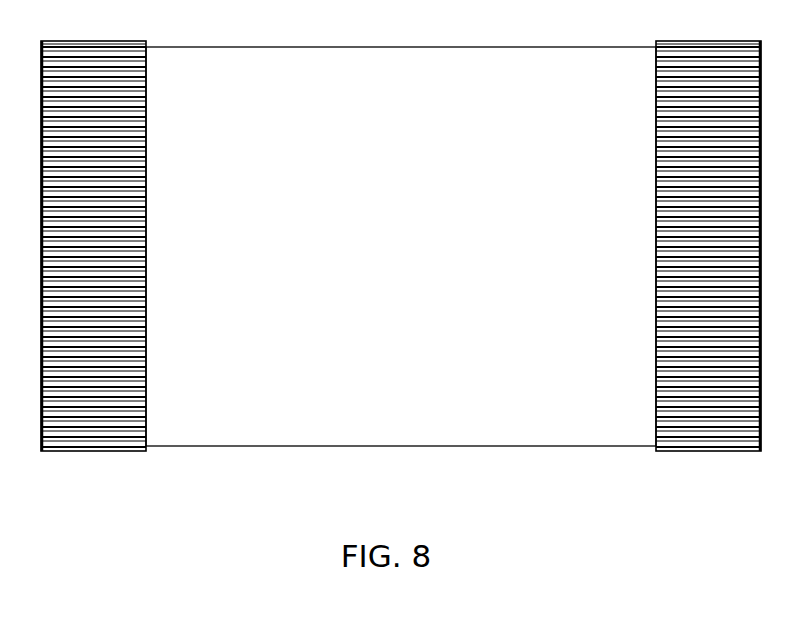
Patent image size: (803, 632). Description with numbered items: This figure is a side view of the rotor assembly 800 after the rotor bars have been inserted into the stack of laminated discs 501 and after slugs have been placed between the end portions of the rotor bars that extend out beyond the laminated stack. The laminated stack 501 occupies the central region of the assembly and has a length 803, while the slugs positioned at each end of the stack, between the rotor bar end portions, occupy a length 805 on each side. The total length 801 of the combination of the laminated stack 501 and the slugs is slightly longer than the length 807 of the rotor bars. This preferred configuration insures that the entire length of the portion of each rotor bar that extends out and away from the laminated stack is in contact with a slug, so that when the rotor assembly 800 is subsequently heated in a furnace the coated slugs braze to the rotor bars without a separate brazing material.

The rotor assembly 800 is at (397, 296).
The stack of laminated discs 501 is at (377, 230).
The length of the slugs 805 is at (146, 454).
The length of the laminated stack 803 is at (656, 464).
The length of the combination of the laminated stack and the slugs 801 is at (761, 483).
The length of rotor bars 807 is at (758, 18).